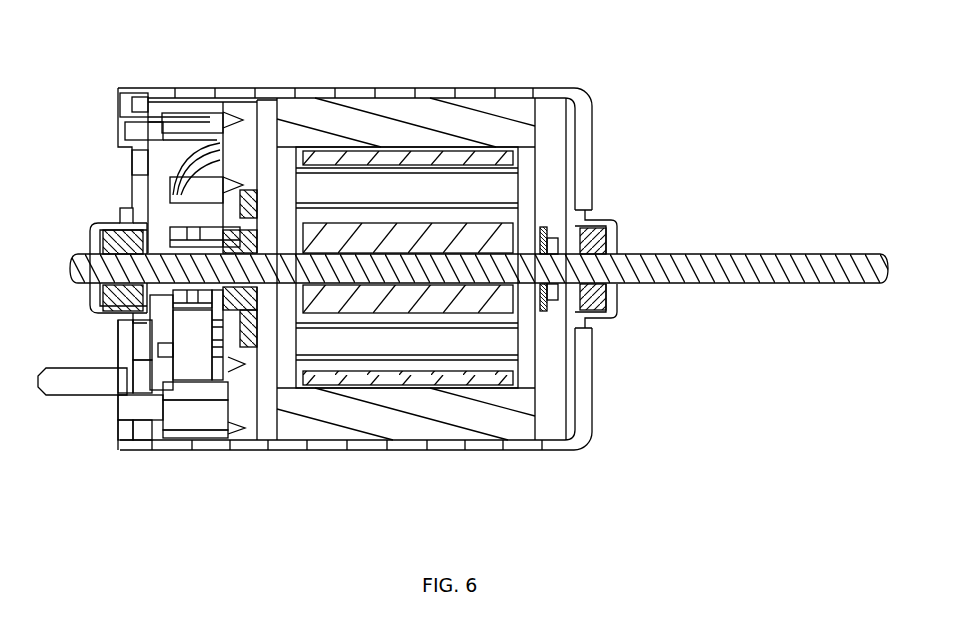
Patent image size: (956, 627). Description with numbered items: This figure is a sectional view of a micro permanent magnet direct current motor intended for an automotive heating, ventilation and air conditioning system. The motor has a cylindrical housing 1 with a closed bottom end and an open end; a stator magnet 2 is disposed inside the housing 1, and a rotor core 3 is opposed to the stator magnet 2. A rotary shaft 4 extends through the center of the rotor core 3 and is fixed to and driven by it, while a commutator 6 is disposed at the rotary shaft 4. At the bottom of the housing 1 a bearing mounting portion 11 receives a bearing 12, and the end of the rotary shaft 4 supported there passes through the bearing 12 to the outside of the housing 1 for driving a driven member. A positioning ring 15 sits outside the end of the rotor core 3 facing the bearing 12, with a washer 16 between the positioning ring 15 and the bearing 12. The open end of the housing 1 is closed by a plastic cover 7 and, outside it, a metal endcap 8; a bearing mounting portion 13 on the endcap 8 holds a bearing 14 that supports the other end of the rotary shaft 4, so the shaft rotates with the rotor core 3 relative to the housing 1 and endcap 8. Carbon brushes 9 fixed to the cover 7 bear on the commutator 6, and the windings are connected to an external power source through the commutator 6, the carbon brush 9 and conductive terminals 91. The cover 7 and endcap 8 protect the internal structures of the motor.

The housing 1 is at (319, 88).
The stator magnet 2 is at (410, 115).
The rotor core 3 is at (485, 183).
The rotary shaft 4 is at (817, 258).
The commutator 6 is at (267, 290).
The cover 7 is at (160, 370).
The endcap 8 is at (143, 368).
The carbon brush 9 is at (190, 367).
The conductive terminal 91 is at (97, 373).
The bearing mounting portion 11 is at (617, 240).
The bearing 12 is at (593, 294).
The bearing mounting portion 13 is at (97, 228).
The bearing 14 is at (127, 293).
The positioning ring 15 is at (546, 240).
The washer 16 is at (567, 295).